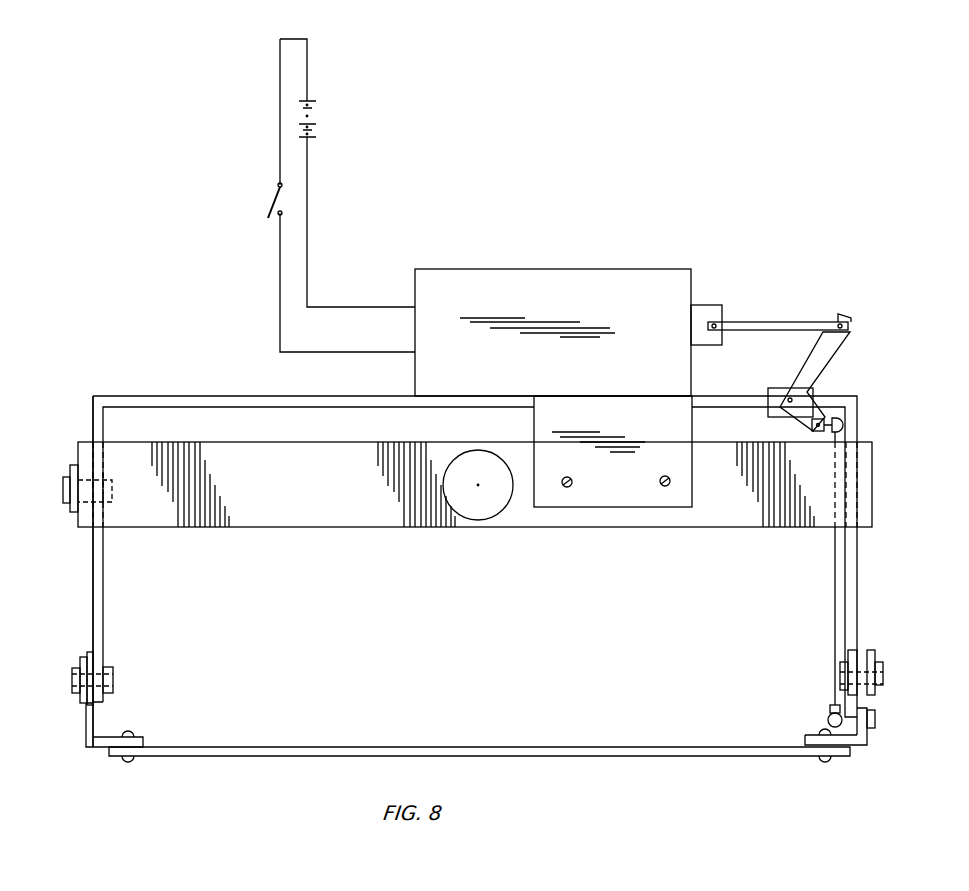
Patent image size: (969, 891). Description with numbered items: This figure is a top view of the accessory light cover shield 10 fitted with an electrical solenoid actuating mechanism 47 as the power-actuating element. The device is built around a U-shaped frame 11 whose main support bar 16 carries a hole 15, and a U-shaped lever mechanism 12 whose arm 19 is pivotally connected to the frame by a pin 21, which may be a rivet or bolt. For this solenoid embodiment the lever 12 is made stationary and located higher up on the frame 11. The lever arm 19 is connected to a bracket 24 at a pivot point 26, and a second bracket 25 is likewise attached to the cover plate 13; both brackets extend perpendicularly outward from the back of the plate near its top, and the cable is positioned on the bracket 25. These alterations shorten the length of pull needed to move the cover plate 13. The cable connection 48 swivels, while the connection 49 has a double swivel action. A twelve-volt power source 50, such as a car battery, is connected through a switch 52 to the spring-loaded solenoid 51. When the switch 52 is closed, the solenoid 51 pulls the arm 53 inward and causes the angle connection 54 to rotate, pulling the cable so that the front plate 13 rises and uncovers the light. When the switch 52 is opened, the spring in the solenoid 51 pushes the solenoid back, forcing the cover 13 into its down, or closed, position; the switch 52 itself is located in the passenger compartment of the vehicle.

The accessory light cover shield 10 is at (102, 768).
The U-shaped frame 11 is at (210, 542).
The U-shaped lever mechanism 12 is at (865, 390).
The cover plate 13 is at (306, 752).
The hole 15 is at (481, 511).
The main support bar 16 is at (272, 518).
The arm 19 is at (105, 603).
The pin 21 is at (61, 486).
The bracket 24 is at (97, 722).
The bracket 25 is at (868, 695).
The pivot point 26 is at (113, 680).
The electrical solenoid actuating mechanism 47 is at (586, 270).
The cable connection 48 is at (828, 718).
The connection 49 is at (844, 423).
The 12-volt power source 50 is at (318, 104).
The spring-loaded solenoid 51 is at (452, 268).
The switch 52 is at (266, 201).
The arm 53 is at (770, 321).
The angle connection 54 is at (832, 357).